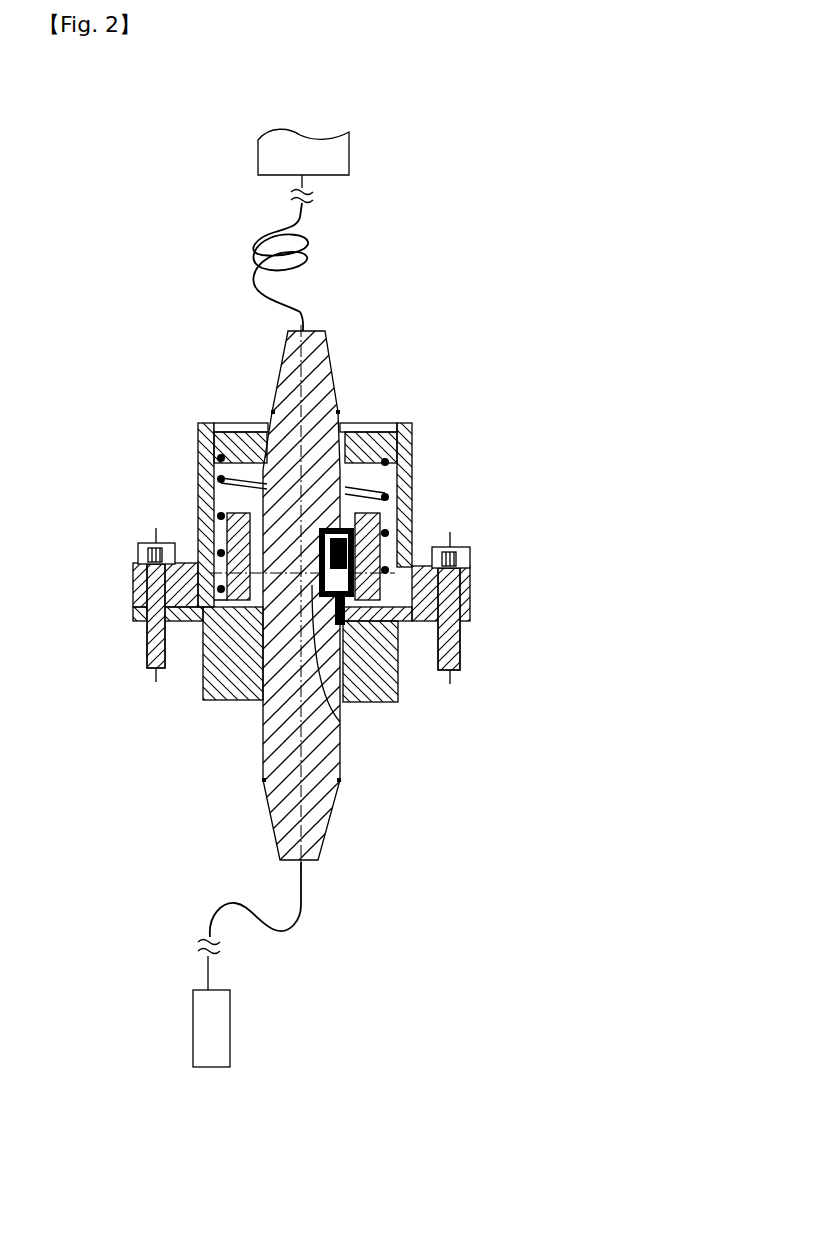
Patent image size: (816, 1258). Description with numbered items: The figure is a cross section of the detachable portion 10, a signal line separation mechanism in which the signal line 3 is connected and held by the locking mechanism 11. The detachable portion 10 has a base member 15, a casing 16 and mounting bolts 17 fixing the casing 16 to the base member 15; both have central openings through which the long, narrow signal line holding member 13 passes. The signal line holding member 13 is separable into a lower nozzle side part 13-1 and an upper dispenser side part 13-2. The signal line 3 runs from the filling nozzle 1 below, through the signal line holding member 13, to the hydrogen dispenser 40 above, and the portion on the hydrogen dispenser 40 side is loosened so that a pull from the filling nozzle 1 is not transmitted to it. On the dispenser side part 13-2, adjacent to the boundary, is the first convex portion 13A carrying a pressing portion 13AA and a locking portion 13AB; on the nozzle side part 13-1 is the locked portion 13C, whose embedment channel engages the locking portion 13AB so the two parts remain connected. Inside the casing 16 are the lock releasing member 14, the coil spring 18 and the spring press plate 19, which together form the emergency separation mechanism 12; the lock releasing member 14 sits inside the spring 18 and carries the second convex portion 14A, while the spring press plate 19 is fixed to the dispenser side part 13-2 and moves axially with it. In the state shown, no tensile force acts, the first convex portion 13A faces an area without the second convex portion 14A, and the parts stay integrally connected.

The filling nozzle 1 is at (232, 1027).
The signal line 3 is at (292, 306).
The detachable portion 10 is at (508, 362).
The locking mechanism 11 is at (132, 452).
The emergency separation mechanism 12 is at (197, 472).
The signal line holding member 13 is at (352, 337).
The nozzle side part 13-1 is at (338, 812).
The dispenser side part 13-2 is at (342, 378).
The first convex portion 13A is at (458, 528).
The pressing portion 13AA is at (360, 533).
The locking portion 13AB is at (365, 562).
The locked portion 13C is at (333, 718).
The lock releasing member 14 is at (240, 513).
The second convex portion 14A is at (343, 624).
The base member 15 is at (205, 700).
The casing 16 is at (204, 425).
The mounting bolts 17 is at (140, 545).
The spring 18 is at (414, 462).
The spring press plate 19 is at (378, 421).
The hydrogen dispenser 40 is at (353, 148).